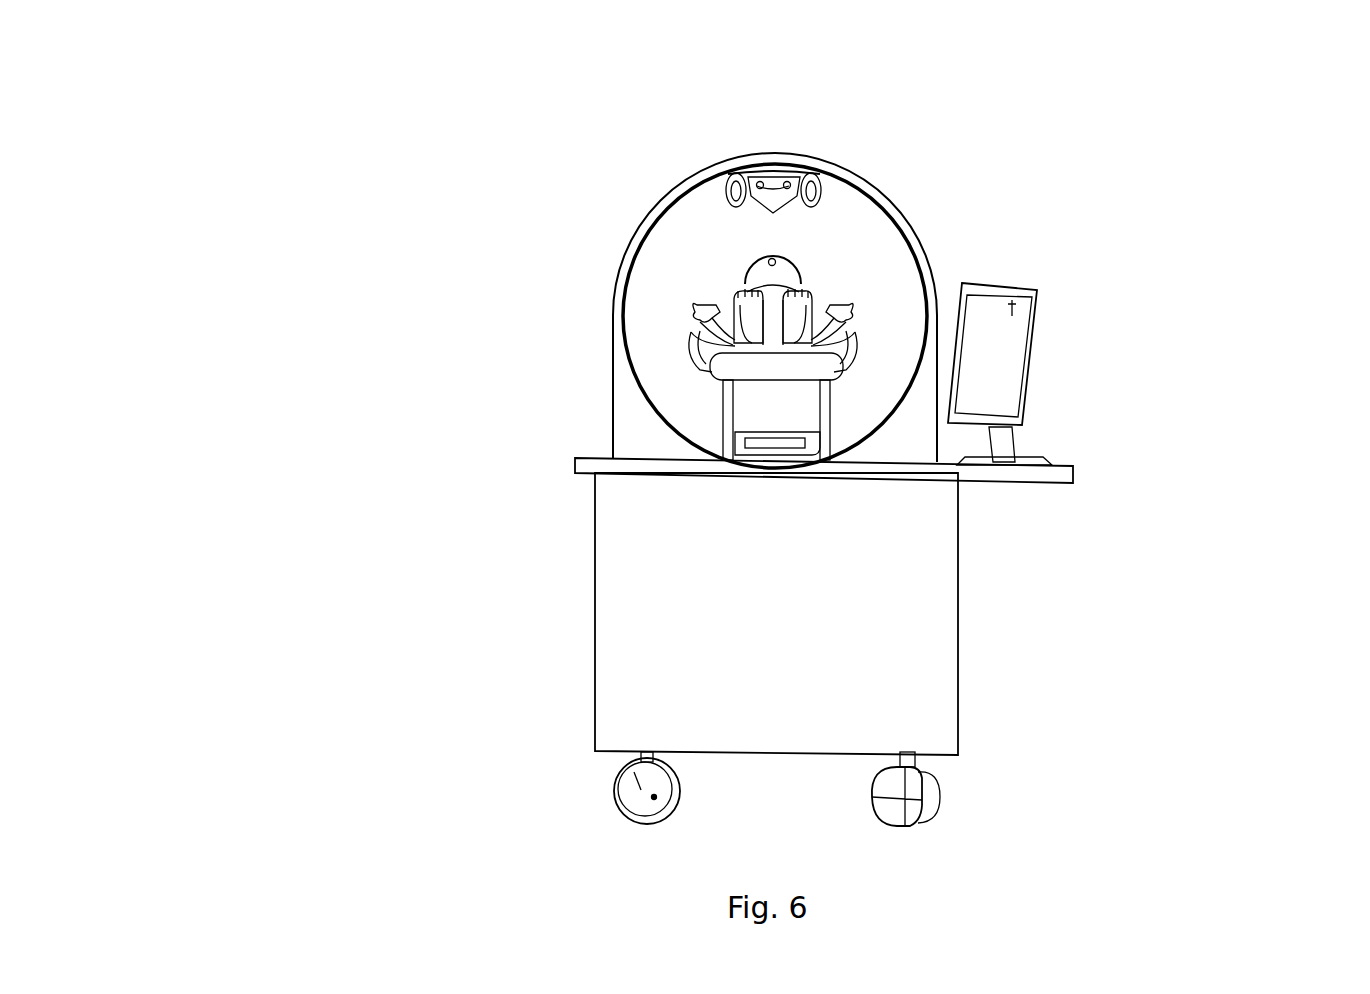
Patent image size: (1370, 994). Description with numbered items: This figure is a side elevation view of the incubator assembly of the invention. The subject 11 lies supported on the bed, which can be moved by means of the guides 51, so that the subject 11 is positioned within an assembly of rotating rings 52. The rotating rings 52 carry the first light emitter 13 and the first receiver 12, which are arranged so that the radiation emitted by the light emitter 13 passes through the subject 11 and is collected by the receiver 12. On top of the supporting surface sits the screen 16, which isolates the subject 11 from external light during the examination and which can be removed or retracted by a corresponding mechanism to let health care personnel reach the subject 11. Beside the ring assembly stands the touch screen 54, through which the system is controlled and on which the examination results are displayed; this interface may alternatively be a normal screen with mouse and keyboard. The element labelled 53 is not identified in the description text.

The subject 11 is at (750, 278).
The first receiver 12 is at (770, 443).
The first light emitter 13 is at (800, 160).
The screen 16 is at (715, 165).
The guides 51 is at (733, 367).
The assembly of rotating rings 52 is at (900, 233).
The cart with table 53 is at (993, 480).
The touch screen 54 is at (1000, 307).